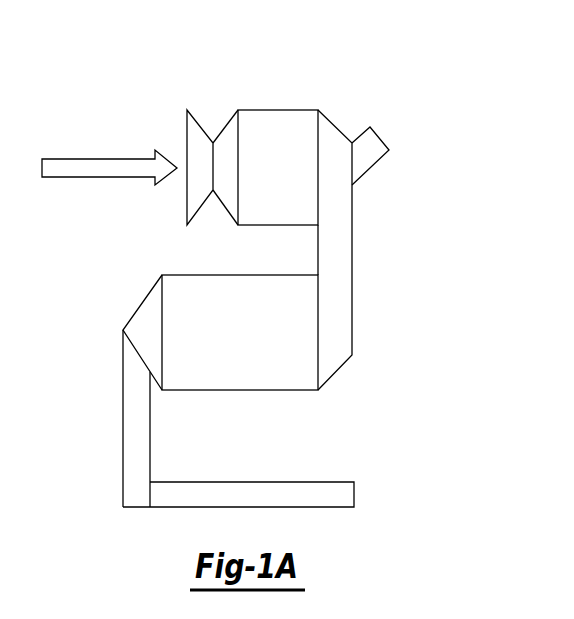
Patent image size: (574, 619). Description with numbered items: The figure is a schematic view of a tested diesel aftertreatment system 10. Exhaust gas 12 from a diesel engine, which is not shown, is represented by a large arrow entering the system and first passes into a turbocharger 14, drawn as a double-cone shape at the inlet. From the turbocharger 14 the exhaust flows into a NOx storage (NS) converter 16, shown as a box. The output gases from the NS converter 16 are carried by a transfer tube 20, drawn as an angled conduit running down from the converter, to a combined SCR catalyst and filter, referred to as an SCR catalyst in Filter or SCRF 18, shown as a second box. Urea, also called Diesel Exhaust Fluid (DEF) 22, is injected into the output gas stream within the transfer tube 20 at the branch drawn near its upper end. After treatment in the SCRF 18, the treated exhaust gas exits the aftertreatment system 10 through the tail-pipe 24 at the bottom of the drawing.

The diesel aftertreatment system 10 is at (231, 54).
The exhaust gas 12 is at (98, 158).
The turbocharger 14 is at (198, 121).
The NOx storage converter 16 is at (278, 110).
The SCR catalyst in filter 18 is at (238, 390).
The transfer tube 20 is at (353, 249).
The Diesel Exhaust Fluid 22 is at (356, 135).
The tail-pipe 24 is at (283, 482).